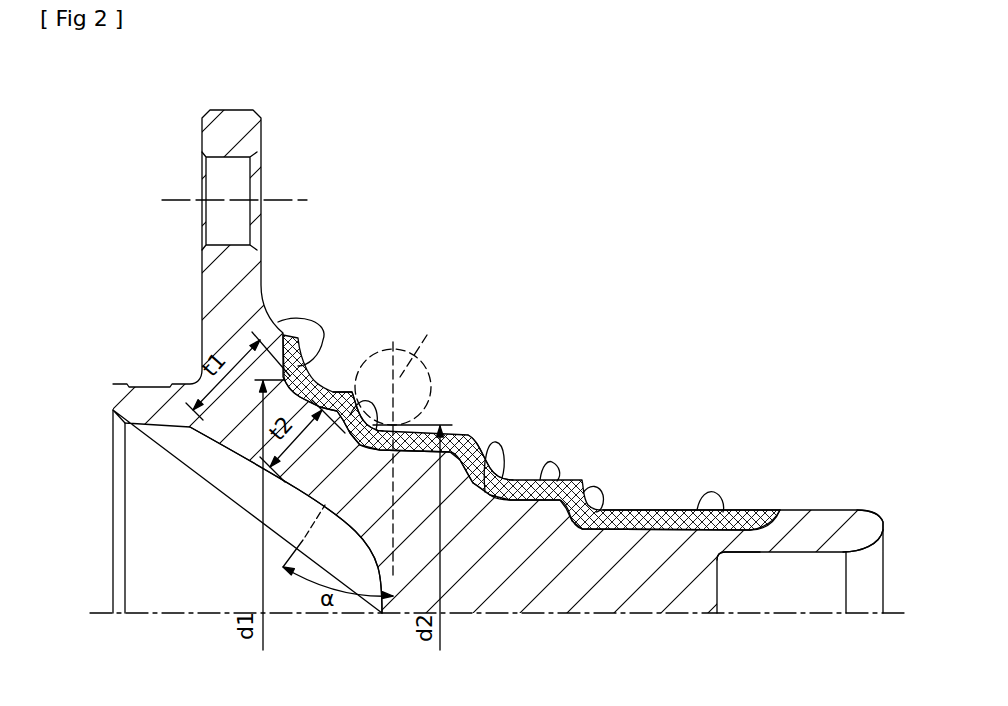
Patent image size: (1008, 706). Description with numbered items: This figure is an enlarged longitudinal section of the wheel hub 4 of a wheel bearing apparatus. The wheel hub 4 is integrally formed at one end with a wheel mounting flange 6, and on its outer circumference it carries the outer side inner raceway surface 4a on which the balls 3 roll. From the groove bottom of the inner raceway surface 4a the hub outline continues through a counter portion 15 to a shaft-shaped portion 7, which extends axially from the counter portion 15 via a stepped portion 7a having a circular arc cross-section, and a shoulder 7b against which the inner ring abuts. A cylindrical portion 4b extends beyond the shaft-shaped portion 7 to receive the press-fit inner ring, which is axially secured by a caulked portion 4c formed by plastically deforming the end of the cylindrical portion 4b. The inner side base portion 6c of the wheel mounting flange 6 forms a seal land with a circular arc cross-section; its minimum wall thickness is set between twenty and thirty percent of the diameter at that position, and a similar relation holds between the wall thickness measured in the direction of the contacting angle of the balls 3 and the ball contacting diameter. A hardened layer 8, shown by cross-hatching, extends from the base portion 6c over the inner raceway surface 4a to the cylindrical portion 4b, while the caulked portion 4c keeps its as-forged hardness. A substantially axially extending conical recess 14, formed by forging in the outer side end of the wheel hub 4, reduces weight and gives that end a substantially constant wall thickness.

The wheel mounting flange 6 is at (233, 114).
The base portion 6c is at (280, 320).
The balls 3 is at (418, 398).
The wheel hub 4 is at (310, 477).
The conical recess 14 is at (325, 533).
The inner raceway surface 4a is at (387, 400).
The counter portion 15 is at (462, 462).
The stepped portion 7a is at (495, 493).
The shaft-shaped portion 7 is at (538, 483).
The shoulder 7b is at (602, 533).
The hardened layer 8 is at (638, 510).
The cylindrical portion 4b is at (727, 513).
The caulked portion 4c is at (852, 537).